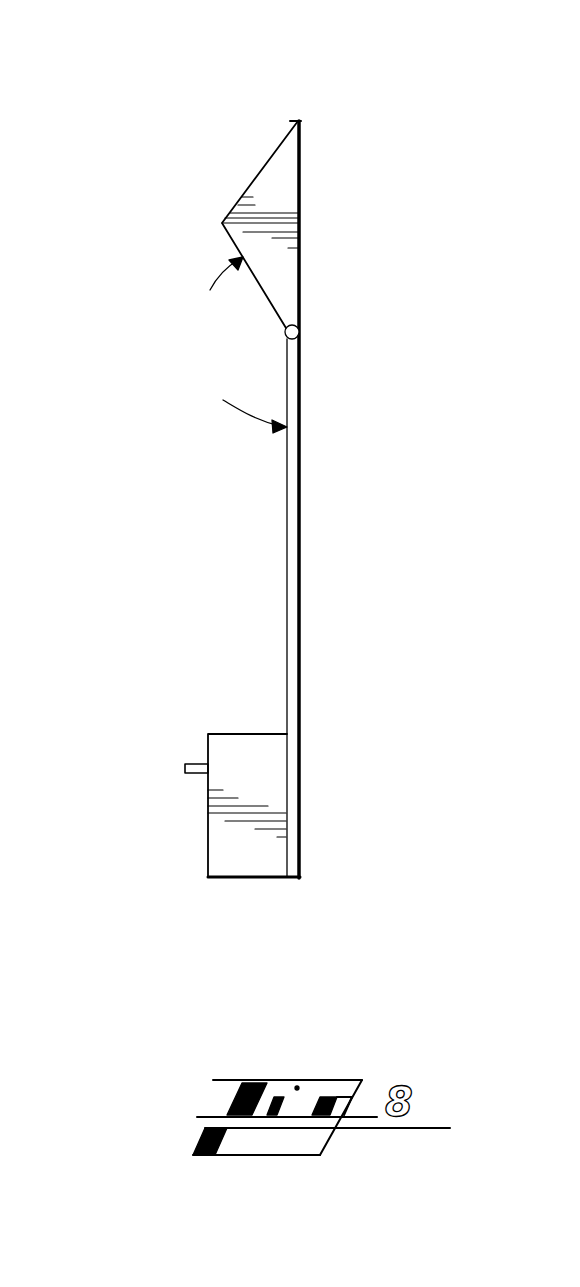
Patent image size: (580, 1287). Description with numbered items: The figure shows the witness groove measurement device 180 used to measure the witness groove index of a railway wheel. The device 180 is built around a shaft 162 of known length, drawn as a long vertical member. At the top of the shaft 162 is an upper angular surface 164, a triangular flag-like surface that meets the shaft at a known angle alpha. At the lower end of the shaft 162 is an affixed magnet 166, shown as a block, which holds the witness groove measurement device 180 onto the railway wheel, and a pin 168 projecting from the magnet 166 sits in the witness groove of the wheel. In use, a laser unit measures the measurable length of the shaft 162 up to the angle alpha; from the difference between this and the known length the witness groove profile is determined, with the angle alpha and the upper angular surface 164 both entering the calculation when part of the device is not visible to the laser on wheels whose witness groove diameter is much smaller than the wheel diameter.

The shaft 162 is at (287, 537).
The upper angular surface 164 is at (299, 212).
The affixed magnet 166 is at (300, 780).
The pin 168 is at (192, 774).
The witness groove measurement device 180 is at (162, 272).
The angle α alpha is at (238, 345).